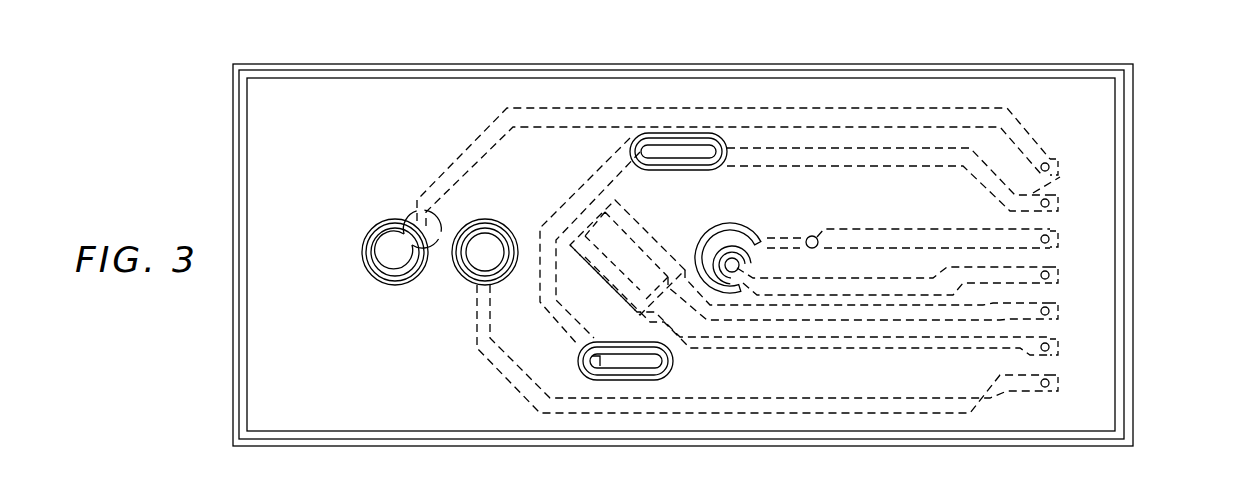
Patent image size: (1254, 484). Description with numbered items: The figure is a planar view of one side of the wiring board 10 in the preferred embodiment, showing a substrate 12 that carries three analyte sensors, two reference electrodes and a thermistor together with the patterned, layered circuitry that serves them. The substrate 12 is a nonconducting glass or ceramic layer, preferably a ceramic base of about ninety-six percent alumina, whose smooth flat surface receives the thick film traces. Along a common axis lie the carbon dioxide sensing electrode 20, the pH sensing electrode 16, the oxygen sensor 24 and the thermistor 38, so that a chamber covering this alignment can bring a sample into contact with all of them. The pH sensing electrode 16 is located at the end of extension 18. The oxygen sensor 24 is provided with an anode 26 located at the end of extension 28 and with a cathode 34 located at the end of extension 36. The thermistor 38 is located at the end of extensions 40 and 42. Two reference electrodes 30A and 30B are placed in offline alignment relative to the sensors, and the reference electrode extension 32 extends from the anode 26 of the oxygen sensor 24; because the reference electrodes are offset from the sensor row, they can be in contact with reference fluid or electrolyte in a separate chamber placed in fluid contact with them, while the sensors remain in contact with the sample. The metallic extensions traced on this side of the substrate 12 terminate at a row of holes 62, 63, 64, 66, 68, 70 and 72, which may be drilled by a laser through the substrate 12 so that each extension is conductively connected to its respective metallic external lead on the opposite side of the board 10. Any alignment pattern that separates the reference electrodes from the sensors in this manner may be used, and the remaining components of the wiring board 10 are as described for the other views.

The board 10 is at (1176, 62).
The substrate 12 is at (1130, 107).
The pH sensing electrode 16 is at (463, 280).
The extension 18 is at (1055, 372).
The carbon dioxide sensing electrode 20 is at (372, 233).
The oxygen sensor 24 is at (721, 236).
The anode 26 is at (722, 250).
The extension 28 is at (1031, 118).
The reference electrode 30A is at (590, 357).
The reference electrode 30B is at (637, 134).
The extension 32 is at (1068, 177).
The cathode 34 is at (736, 262).
The extension 36 is at (1053, 262).
The thermistor 38 is at (630, 253).
The extension 40 is at (1043, 303).
The extension 42 is at (1053, 334).
The hole 62 is at (1050, 163).
The hole 63 is at (1060, 203).
The hole 64 is at (1060, 240).
The hole 66 is at (1060, 277).
The hole 68 is at (1060, 311).
The hole 70 is at (1060, 346).
The hole 72 is at (1048, 386).